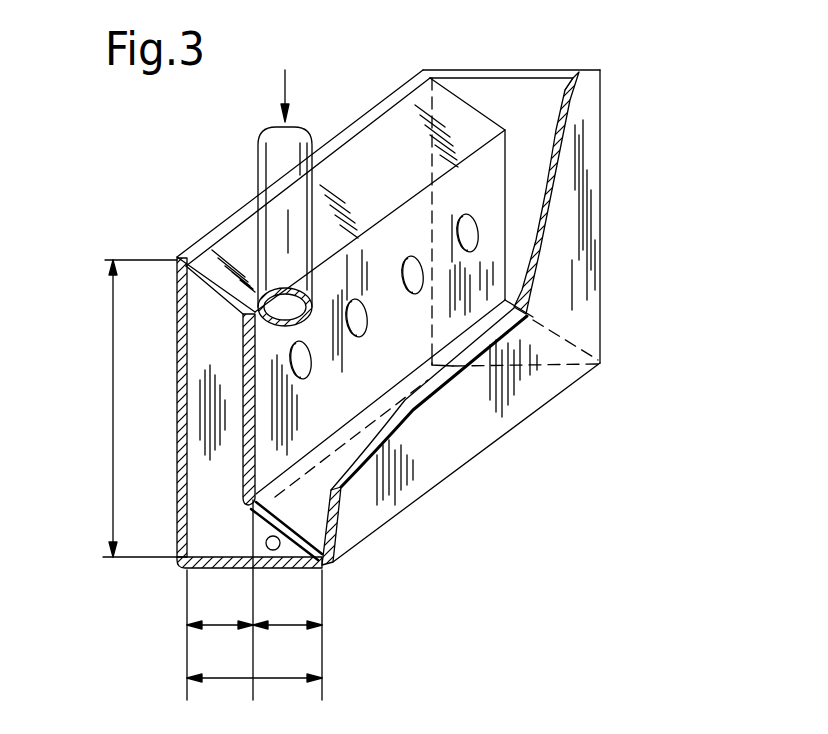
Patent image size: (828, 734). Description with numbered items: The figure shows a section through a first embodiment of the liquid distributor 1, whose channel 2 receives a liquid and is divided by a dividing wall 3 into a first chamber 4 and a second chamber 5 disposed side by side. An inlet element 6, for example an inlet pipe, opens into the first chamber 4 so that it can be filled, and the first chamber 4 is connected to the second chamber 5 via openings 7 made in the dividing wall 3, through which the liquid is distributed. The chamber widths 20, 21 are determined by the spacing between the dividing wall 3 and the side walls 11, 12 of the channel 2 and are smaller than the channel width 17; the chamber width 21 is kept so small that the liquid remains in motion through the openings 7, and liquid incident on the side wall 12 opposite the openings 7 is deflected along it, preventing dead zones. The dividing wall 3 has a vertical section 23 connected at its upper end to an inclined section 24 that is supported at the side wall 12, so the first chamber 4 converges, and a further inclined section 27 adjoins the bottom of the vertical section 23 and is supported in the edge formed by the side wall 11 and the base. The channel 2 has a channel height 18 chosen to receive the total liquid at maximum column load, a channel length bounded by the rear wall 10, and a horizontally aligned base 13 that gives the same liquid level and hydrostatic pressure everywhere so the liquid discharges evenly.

The liquid distributor 1 is at (128, 205).
The channel 2 is at (510, 93).
The dividing wall 3 is at (256, 440).
The first chamber 4 is at (547, 92).
The second chamber 5 is at (227, 428).
The inlet element 6 is at (271, 163).
The openings 7 is at (308, 368).
The rear wall 10 is at (487, 68).
The side wall 11 is at (593, 209).
The side wall 12 is at (377, 107).
The base 13 is at (280, 565).
The channel width 17 is at (270, 680).
The channel height 18 is at (115, 450).
The chamber width 20 is at (289, 626).
The chamber width 21 is at (228, 626).
The vertical section 23 is at (242, 372).
The inclined section 24 is at (217, 293).
The further inclined section 27 is at (288, 515).